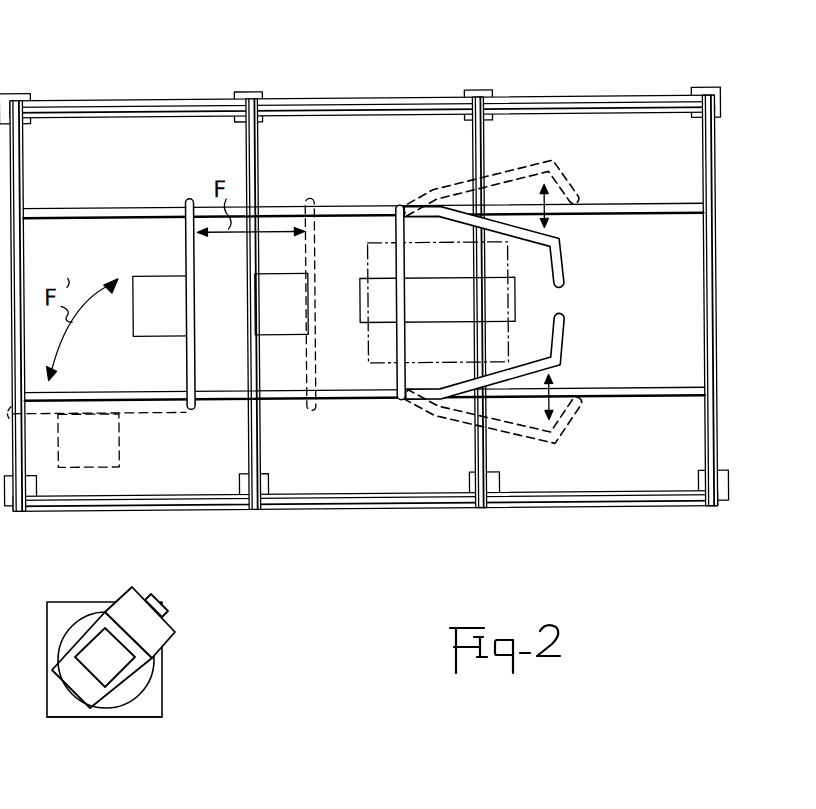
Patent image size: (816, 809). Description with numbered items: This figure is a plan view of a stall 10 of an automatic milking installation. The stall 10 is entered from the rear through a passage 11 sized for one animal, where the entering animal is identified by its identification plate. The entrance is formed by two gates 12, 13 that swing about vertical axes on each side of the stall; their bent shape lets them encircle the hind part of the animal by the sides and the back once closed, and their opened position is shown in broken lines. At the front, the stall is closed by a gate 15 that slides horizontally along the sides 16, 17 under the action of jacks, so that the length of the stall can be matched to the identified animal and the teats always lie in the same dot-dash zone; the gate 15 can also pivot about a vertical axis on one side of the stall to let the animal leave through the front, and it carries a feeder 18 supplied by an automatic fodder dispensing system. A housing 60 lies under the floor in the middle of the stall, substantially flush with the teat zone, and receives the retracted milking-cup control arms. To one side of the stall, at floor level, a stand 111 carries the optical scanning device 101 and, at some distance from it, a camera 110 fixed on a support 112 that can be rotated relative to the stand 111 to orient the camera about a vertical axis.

The stall 10 is at (529, 78).
The passage 11 is at (676, 326).
The gate 12 is at (566, 262).
The gate 13 is at (567, 338).
The gate 15 is at (186, 249).
The side 16 is at (351, 205).
The side 17 is at (343, 401).
The feeder 18 is at (150, 321).
The housing 60 is at (385, 313).
The optical scanning device 101 is at (98, 643).
The camera 110 is at (158, 632).
The stand 111 is at (102, 712).
The support 112 is at (130, 683).